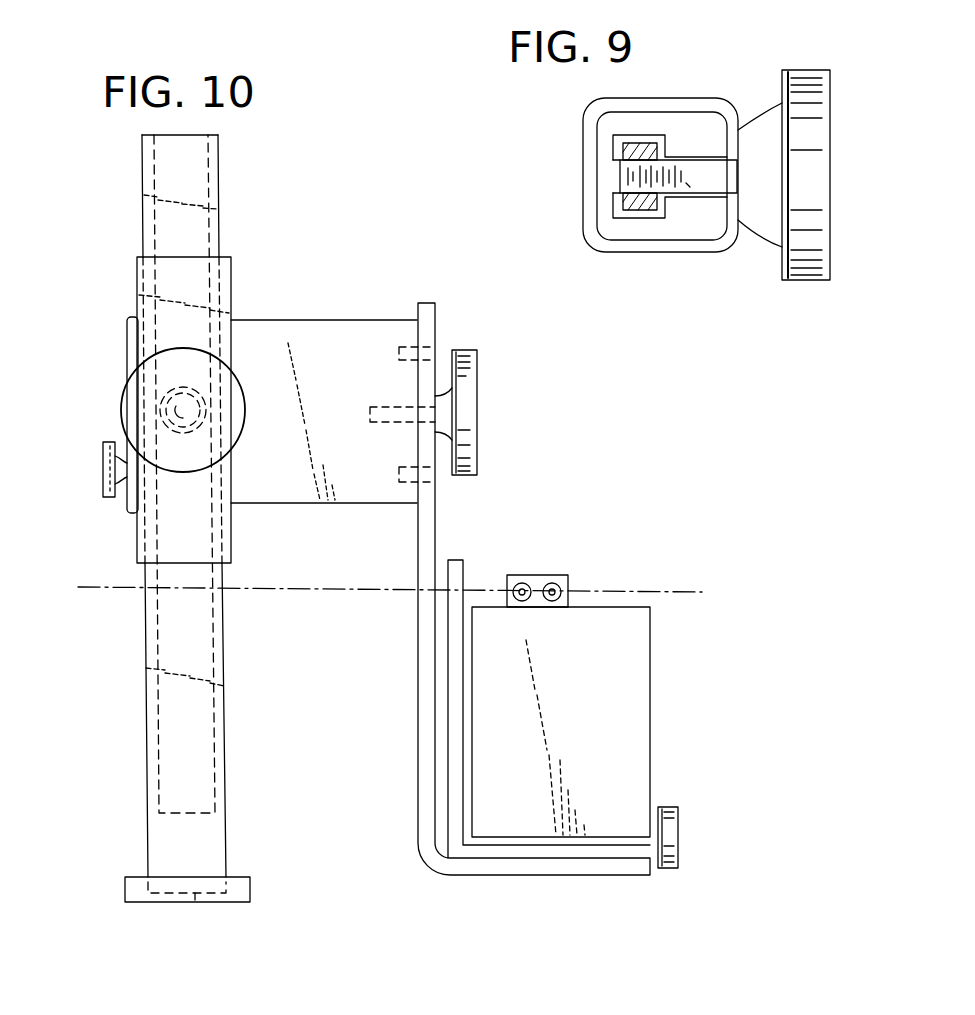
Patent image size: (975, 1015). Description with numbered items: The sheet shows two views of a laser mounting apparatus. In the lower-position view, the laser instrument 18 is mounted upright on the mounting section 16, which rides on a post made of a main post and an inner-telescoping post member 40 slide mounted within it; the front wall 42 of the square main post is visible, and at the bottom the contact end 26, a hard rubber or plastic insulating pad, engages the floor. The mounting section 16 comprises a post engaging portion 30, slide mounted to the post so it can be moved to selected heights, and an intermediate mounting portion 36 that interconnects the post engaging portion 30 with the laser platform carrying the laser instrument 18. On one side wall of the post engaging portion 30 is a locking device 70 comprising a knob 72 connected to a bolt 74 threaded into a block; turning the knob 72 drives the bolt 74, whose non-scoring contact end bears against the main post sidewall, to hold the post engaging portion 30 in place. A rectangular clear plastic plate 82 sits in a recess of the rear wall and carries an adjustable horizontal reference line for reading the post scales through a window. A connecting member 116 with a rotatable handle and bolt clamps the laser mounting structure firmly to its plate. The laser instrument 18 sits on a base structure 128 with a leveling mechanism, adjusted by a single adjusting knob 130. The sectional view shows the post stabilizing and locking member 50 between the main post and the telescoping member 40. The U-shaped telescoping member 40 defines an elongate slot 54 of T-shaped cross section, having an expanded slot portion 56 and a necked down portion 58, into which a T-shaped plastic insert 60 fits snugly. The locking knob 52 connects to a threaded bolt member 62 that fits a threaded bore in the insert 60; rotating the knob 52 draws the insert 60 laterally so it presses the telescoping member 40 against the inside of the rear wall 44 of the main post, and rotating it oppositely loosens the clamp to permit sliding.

In FIG. 10, the mounting section 16 is at (308, 333).
In FIG. 10, the laser instrument 18 is at (638, 707).
In FIG. 10, the contact end 26 is at (242, 890).
In FIG. 10, the post engaging portion 30 is at (233, 538).
In FIG. 10, the intermediate mounting portion 36 is at (428, 543).
In FIG. 10, the inner-telescoping post member 40 is at (225, 713).
In FIG. 10, the front wall 42 is at (193, 753).
In FIG. 10, the locking device 70 is at (123, 372).
In FIG. 10, the knob 72 is at (127, 390).
In FIG. 10, the bolt 74 is at (120, 403).
In FIG. 10, the clear plastic plate 82 is at (130, 508).
In FIG. 10, the connecting member 116 is at (482, 398).
In FIG. 10, the base structure 128 is at (632, 793).
In FIG. 10, the adjusting knob 130 is at (672, 835).
In FIG. 9, the rear wall 44 is at (733, 207).
In FIG. 9, the post stabilizing and locking member 50 is at (755, 112).
In FIG. 9, the locking knob 52 is at (810, 80).
In FIG. 9, the elongate slot 54 is at (637, 135).
In FIG. 9, the expanded slot portion 56 is at (620, 202).
In FIG. 9, the necked down portion 58 is at (688, 185).
In FIG. 9, the plastic insert 60 is at (627, 147).
In FIG. 9, the threaded bolt member 62 is at (623, 178).